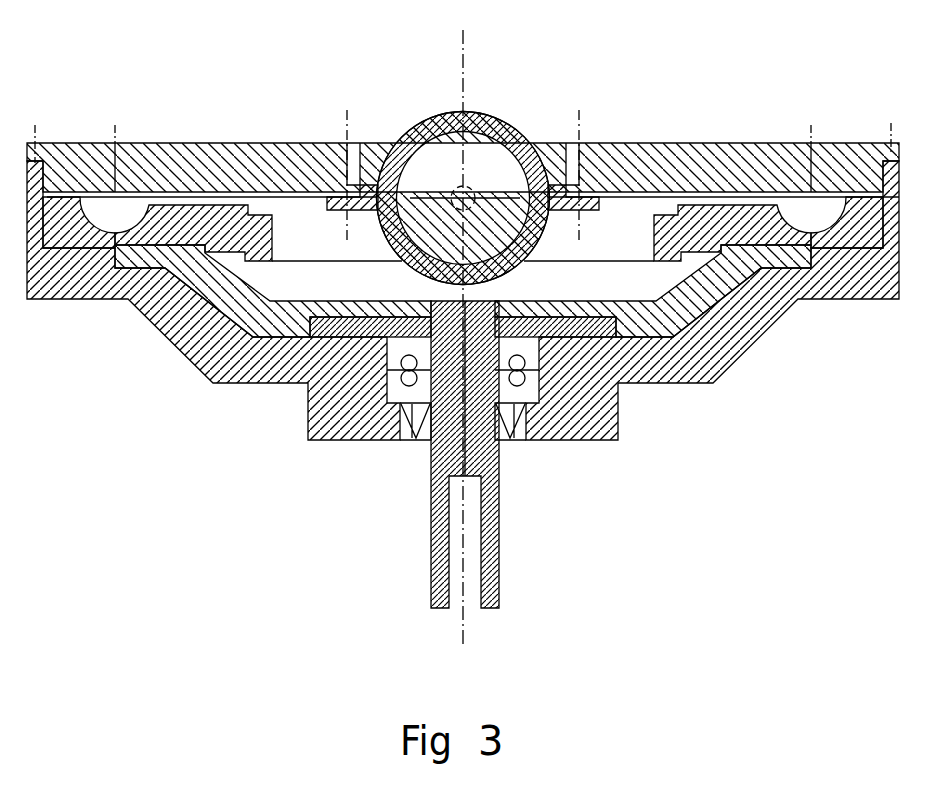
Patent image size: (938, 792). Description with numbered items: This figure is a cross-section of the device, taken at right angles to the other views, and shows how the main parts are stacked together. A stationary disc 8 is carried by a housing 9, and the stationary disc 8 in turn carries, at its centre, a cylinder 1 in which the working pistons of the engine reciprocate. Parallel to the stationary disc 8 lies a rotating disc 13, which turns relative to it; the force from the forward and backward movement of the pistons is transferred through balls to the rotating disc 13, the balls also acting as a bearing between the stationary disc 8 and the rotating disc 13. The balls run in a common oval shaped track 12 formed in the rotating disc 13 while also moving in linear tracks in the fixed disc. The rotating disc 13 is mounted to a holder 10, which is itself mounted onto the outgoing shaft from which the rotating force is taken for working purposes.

The cylinder 1 is at (435, 117).
The stationary disc 8 is at (713, 102).
The housing 9 is at (665, 362).
The holder 10 is at (693, 293).
The oval shaped track 12 is at (818, 228).
The rotating disc 13 is at (658, 229).